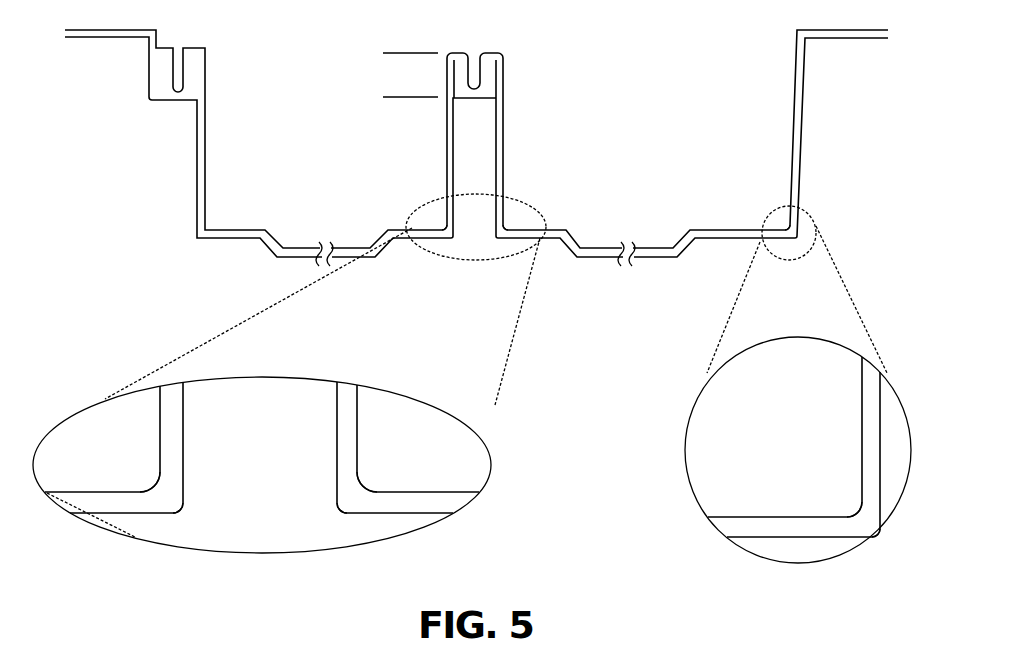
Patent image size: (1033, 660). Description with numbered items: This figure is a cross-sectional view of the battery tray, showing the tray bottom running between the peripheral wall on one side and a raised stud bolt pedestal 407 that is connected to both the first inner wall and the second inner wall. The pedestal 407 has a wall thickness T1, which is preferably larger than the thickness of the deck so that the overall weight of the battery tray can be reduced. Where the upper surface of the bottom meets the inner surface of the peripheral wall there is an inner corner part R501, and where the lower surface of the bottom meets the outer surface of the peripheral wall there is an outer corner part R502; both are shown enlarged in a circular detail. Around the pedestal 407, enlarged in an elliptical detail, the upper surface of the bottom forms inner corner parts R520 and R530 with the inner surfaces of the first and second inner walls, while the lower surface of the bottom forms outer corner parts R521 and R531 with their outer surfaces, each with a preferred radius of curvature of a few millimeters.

The stud bolt pedestal 407 is at (494, 77).
The inner corner part R530 is at (443, 227).
The outer corner part R531 is at (166, 506).
The inner corner part R520 is at (512, 227).
The outer corner part R521 is at (351, 499).
The inner corner part R501 is at (785, 231).
The outer corner part R502 is at (869, 534).
The thickness of the stud bolt pedestal T1 is at (393, 13).